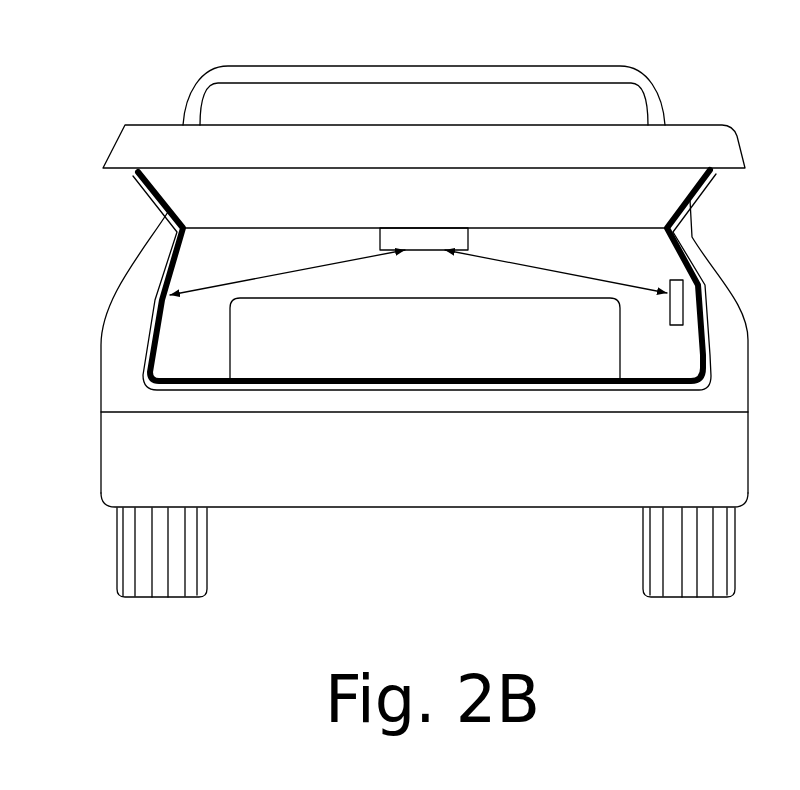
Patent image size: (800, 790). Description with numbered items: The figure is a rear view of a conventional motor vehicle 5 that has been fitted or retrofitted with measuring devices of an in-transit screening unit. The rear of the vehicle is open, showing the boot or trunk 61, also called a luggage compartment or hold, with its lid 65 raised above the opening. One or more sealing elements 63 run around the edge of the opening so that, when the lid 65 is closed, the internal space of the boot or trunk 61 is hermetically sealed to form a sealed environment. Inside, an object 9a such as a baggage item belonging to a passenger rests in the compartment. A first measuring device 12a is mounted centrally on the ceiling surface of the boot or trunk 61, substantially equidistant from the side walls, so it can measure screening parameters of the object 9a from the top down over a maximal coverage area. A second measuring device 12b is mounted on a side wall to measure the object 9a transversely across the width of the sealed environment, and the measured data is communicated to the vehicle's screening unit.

The motor vehicle 5 is at (432, 66).
The lid 65 is at (119, 127).
The sealing element 63 is at (158, 202).
The boot or trunk 61 is at (731, 237).
The first measuring device 12a is at (470, 238).
The second measuring device 12b is at (680, 327).
The object 9a is at (230, 325).